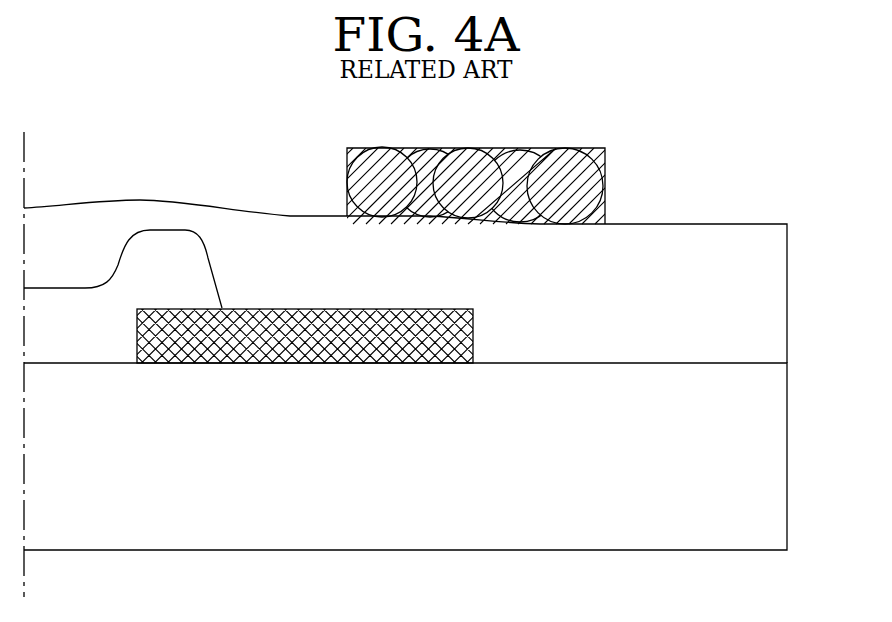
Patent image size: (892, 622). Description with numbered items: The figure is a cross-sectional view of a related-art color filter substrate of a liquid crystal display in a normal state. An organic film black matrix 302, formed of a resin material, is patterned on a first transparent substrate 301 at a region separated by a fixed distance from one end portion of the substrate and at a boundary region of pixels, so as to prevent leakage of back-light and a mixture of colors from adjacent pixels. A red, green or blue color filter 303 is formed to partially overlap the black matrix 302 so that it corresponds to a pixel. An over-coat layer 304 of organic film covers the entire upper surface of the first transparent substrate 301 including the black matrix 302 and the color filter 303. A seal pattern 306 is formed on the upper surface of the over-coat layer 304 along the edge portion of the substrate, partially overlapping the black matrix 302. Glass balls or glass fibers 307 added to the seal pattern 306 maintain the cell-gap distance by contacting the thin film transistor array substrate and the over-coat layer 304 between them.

The first transparent substrate 301 is at (765, 497).
The organic film black matrix 302 is at (283, 337).
The color filter 303 is at (97, 328).
The over-coat layer 304 is at (762, 292).
The seal pattern 306 is at (597, 215).
The glass ball or glass fiber 307 is at (563, 170).